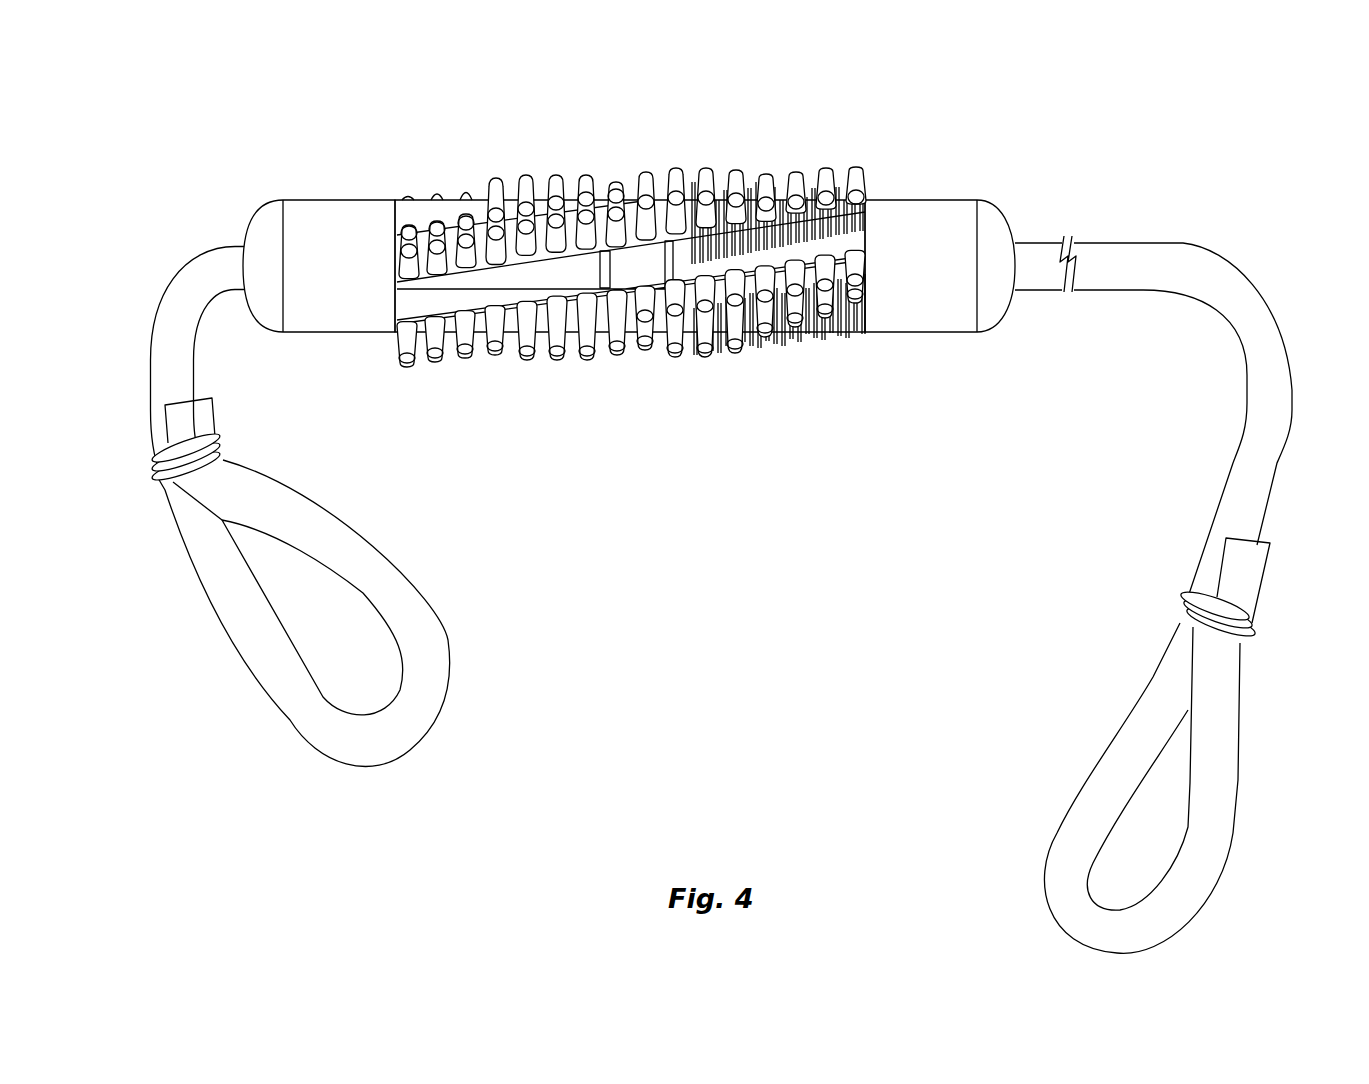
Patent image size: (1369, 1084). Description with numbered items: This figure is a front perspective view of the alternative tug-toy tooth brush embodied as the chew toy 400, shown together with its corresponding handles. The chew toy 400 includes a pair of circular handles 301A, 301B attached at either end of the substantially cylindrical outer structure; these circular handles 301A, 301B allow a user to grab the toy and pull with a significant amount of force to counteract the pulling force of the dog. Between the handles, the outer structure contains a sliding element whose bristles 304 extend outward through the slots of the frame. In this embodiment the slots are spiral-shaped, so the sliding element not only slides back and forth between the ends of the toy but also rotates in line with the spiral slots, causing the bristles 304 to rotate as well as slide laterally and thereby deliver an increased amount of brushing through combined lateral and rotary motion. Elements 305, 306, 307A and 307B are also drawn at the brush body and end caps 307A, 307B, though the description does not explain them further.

The chew toy 400 is at (378, 150).
The circular handle 301A is at (180, 262).
The circular handle 301B is at (1187, 255).
The bristles 304 is at (858, 178).
The bristles 305 is at (777, 185).
The bristle strips with teeth 306 is at (427, 217).
The first end cap 307A is at (327, 320).
The second end cap 307B is at (930, 213).